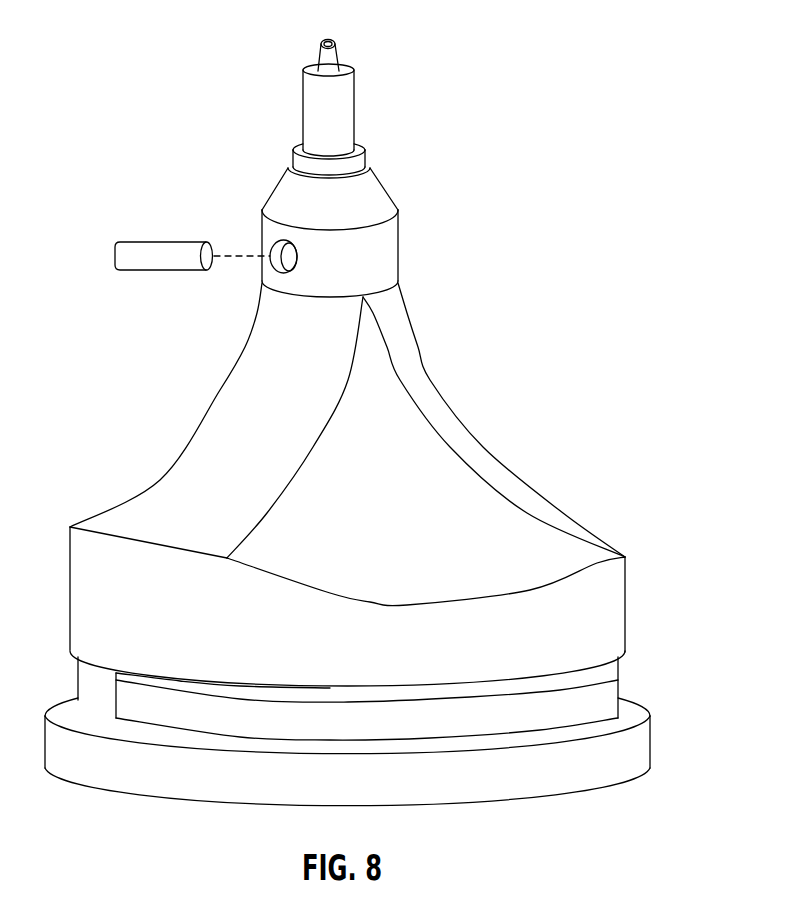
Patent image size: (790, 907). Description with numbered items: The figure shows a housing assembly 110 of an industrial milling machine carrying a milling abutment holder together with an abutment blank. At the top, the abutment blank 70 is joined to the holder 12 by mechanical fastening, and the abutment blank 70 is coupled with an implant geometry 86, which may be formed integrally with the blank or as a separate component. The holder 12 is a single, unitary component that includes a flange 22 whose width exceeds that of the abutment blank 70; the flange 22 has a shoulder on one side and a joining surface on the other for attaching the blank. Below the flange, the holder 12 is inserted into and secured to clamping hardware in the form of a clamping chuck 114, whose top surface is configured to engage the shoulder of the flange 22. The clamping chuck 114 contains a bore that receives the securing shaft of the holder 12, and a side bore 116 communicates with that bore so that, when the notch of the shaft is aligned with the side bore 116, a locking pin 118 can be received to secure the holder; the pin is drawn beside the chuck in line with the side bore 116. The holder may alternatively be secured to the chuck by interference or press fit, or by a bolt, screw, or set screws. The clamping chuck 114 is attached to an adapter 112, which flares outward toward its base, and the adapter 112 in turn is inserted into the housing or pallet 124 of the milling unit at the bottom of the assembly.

The holder 12 is at (366, 157).
The flange 22 is at (292, 158).
The abutment blank 70 is at (355, 90).
The implant geometry 86 is at (322, 43).
The housing assembly 110 is at (156, 477).
The adapter 112 is at (222, 391).
The clamping chuck 114 is at (400, 236).
The side bore 116 is at (271, 249).
The locking pin 118 is at (153, 242).
The pallet 124 is at (620, 692).